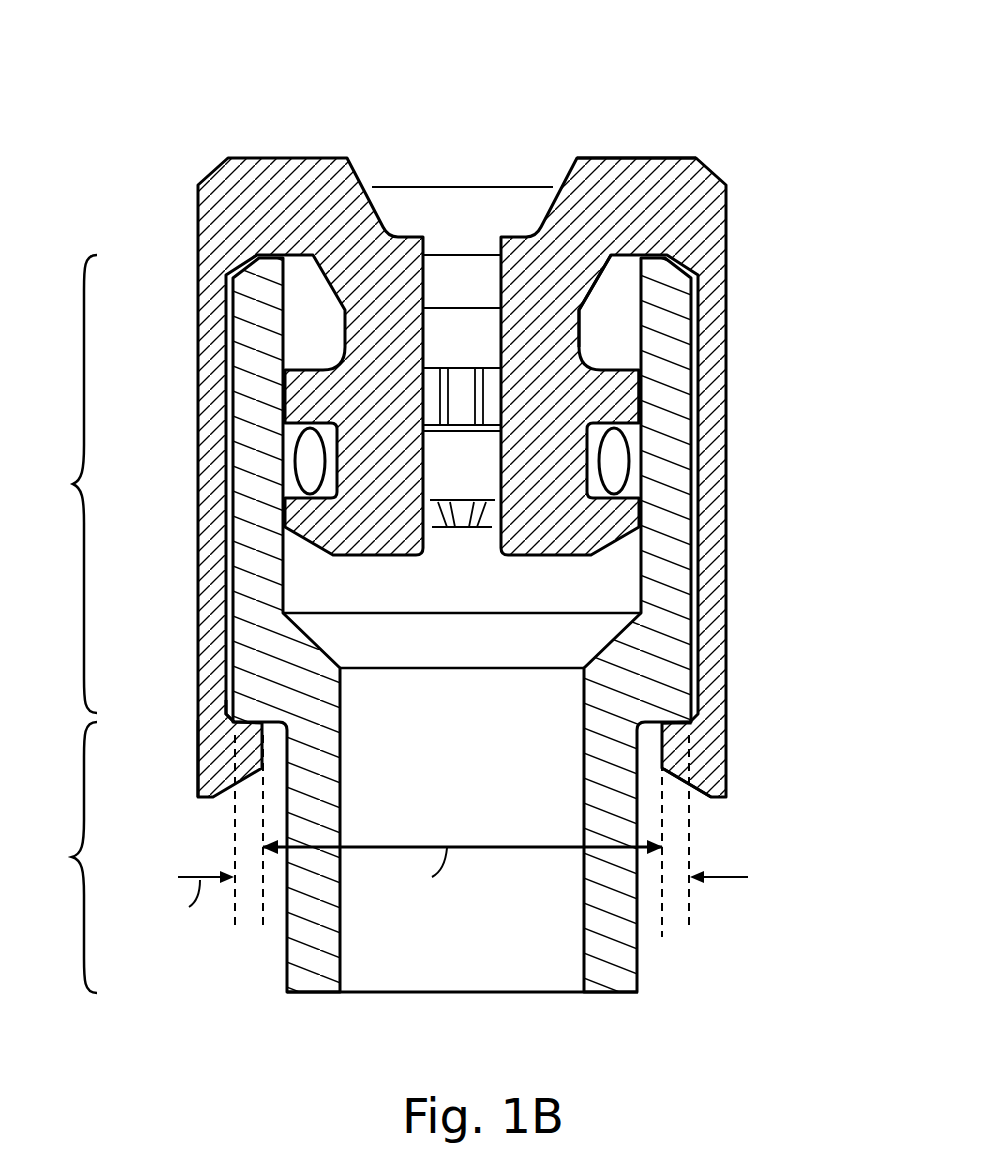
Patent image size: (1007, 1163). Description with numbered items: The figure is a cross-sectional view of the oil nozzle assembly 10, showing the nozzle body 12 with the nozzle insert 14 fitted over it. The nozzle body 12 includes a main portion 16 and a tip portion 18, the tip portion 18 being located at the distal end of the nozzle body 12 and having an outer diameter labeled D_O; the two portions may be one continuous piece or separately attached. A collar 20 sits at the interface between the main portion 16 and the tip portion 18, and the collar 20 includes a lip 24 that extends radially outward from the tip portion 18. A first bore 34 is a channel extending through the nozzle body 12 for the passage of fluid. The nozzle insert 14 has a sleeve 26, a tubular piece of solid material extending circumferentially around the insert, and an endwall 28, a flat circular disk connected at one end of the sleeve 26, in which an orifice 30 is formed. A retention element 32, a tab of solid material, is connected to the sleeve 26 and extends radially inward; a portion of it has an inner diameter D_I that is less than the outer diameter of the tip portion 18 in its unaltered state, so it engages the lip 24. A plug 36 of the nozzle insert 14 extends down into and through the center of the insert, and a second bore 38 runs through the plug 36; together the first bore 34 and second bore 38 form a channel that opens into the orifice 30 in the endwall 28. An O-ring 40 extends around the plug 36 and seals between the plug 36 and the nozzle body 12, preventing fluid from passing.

The oil nozzle assembly 10 is at (180, 99).
The nozzle body 12 is at (646, 967).
The nozzle insert 14 is at (732, 212).
The main portion 16 is at (66, 857).
The tip portion 18 is at (69, 484).
The collar 20 is at (660, 740).
The lip 24 is at (236, 720).
The sleeve 26 is at (198, 760).
The endwall 28 is at (640, 157).
The orifice 30 is at (408, 172).
The retention element 32 is at (707, 752).
The first bore 34 is at (503, 968).
The plug 36 is at (585, 392).
The second bore 38 is at (505, 297).
The O-ring 40 is at (292, 460).